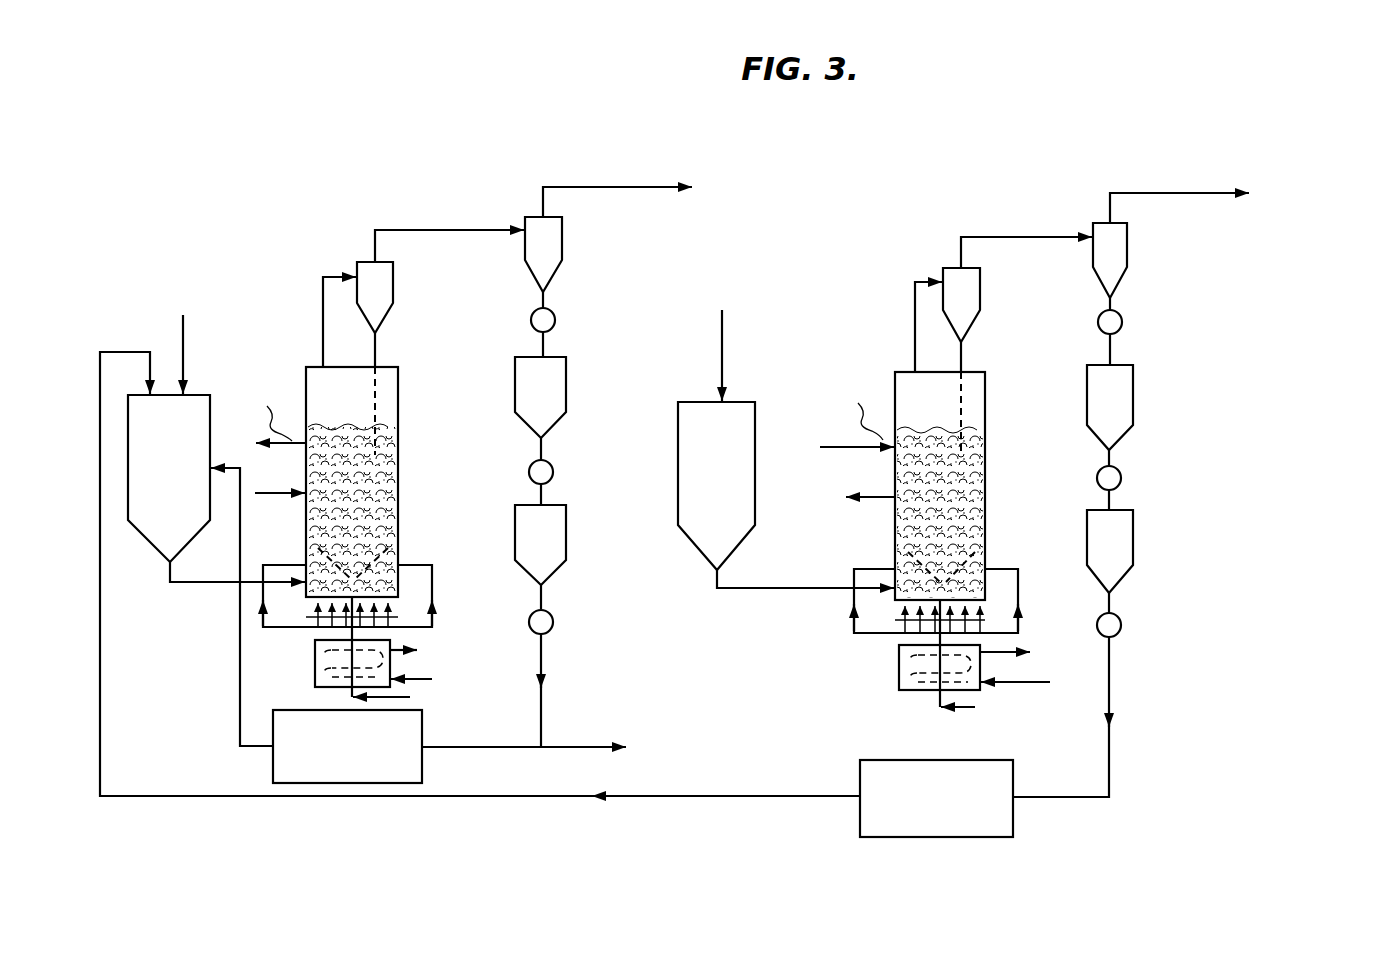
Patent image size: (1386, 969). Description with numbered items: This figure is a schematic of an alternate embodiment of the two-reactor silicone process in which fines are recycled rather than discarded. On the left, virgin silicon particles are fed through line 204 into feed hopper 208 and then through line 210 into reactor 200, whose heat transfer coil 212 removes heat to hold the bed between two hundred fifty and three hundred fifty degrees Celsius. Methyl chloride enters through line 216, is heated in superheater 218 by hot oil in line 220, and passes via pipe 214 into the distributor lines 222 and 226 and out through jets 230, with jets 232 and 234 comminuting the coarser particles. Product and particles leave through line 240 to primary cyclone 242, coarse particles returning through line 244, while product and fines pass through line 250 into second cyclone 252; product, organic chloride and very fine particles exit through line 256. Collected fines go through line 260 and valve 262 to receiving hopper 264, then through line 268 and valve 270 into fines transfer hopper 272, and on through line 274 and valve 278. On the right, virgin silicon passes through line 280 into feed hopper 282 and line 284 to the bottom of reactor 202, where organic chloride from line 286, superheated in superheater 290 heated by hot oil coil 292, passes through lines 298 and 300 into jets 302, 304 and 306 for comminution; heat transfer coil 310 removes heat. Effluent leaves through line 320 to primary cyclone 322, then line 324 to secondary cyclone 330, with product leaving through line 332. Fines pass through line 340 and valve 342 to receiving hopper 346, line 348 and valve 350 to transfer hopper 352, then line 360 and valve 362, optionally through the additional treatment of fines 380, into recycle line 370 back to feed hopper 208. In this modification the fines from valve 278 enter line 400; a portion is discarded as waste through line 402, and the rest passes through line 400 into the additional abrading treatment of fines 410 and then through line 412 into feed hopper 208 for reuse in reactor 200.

The reactor 200 is at (400, 414).
The reactor 202 is at (985, 398).
The line 204 is at (182, 327).
The feed hopper 208 is at (149, 395).
The line 210 is at (210, 582).
The heat transfer coil 212 is at (300, 492).
The methyl chloride feed pipe 214 is at (646, 652).
The line 216 is at (432, 694).
The superheater 218 is at (315, 685).
The line 220 is at (438, 649).
The line 222 is at (432, 577).
The line 226 is at (262, 590).
The jets 230 is at (330, 610).
The jet 232 is at (322, 560).
The jet 234 is at (393, 560).
The reactor outlet line 240 is at (323, 277).
The primary cyclone 242 is at (384, 321).
The line 244 is at (378, 351).
The line 250 is at (451, 230).
The second cyclone 252 is at (553, 280).
The line 256 is at (648, 187).
The line 260 is at (552, 301).
The valve 262 is at (555, 325).
The receiving hopper 264 is at (514, 381).
The fines receiving hopper outlet line 268 is at (545, 447).
The valve 270 is at (554, 473).
The fines transfer hopper 272 is at (514, 527).
The line 274 is at (549, 596).
The valve 278 is at (552, 626).
The line 280 is at (724, 346).
The feed hopper 282 is at (746, 401).
The line 284 is at (763, 588).
The line 286 is at (966, 708).
The superheater 290 is at (901, 692).
The hot oil coil 292 is at (1031, 653).
The line 298 is at (890, 634).
The line 300 is at (963, 606).
The jets 302 is at (918, 615).
The jet 304 is at (955, 562).
The jet 306 is at (955, 566).
The heat transfer coil 310 is at (841, 496).
The line 320 is at (914, 308).
The primary cyclone 322 is at (974, 322).
The line 324 is at (1028, 237).
The secondary cyclone 330 is at (1127, 287).
The line 332 is at (1110, 205).
The line 340 is at (1128, 305).
The valve 342 is at (1128, 322).
The receiving hopper 346 is at (1087, 378).
The line 348 is at (1115, 455).
The valve 350 is at (1121, 480).
The transfer hopper 352 is at (1087, 521).
The line 360 is at (1114, 604).
The valve 362 is at (1121, 627).
The line 370 is at (267, 796).
The additional treatment of the fines 380 is at (1013, 821).
The line 400 is at (490, 747).
The line 402 is at (573, 748).
The additional treatment of fines 410 is at (422, 732).
The line 412 is at (239, 734).